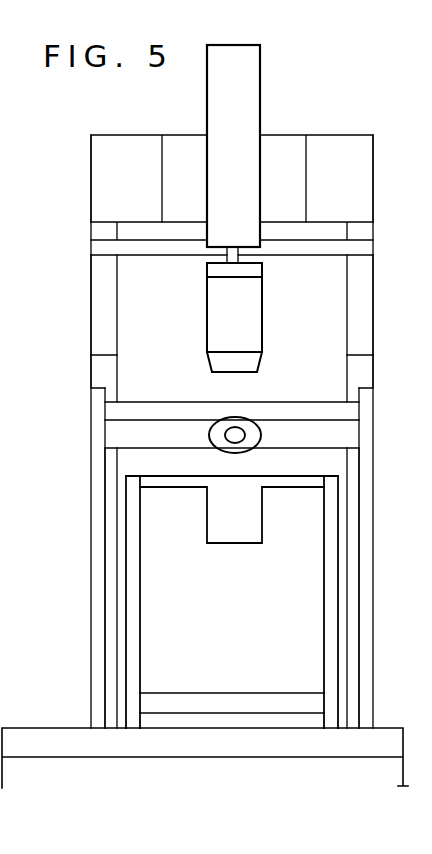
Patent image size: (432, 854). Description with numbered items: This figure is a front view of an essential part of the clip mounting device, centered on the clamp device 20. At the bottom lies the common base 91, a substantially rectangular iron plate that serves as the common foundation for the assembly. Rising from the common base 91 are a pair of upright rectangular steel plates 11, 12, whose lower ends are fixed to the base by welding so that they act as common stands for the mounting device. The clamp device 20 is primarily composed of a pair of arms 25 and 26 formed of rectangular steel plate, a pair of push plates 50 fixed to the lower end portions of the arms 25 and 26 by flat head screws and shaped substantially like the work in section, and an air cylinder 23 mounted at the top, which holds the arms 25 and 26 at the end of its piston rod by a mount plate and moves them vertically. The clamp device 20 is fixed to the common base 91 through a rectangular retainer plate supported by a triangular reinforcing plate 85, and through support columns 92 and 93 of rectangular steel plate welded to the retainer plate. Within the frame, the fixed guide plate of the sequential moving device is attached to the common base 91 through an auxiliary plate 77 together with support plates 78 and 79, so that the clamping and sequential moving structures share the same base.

The upright rectangular steel plate 11 is at (97, 558).
The upright rectangular steel plate 12 is at (366, 575).
The clamp device 20 is at (267, 125).
The air cylinder 23 is at (252, 70).
The arm 25 is at (98, 307).
The arm 26 is at (363, 313).
The push plate 50 is at (100, 371).
The auxiliary plate 77 is at (245, 676).
The support plate 78 is at (132, 728).
The support plate 79 is at (332, 728).
The triangular reinforcing plate 85 is at (178, 150).
The common base 91 is at (38, 743).
The support column 92 is at (110, 728).
The support column 93 is at (352, 728).